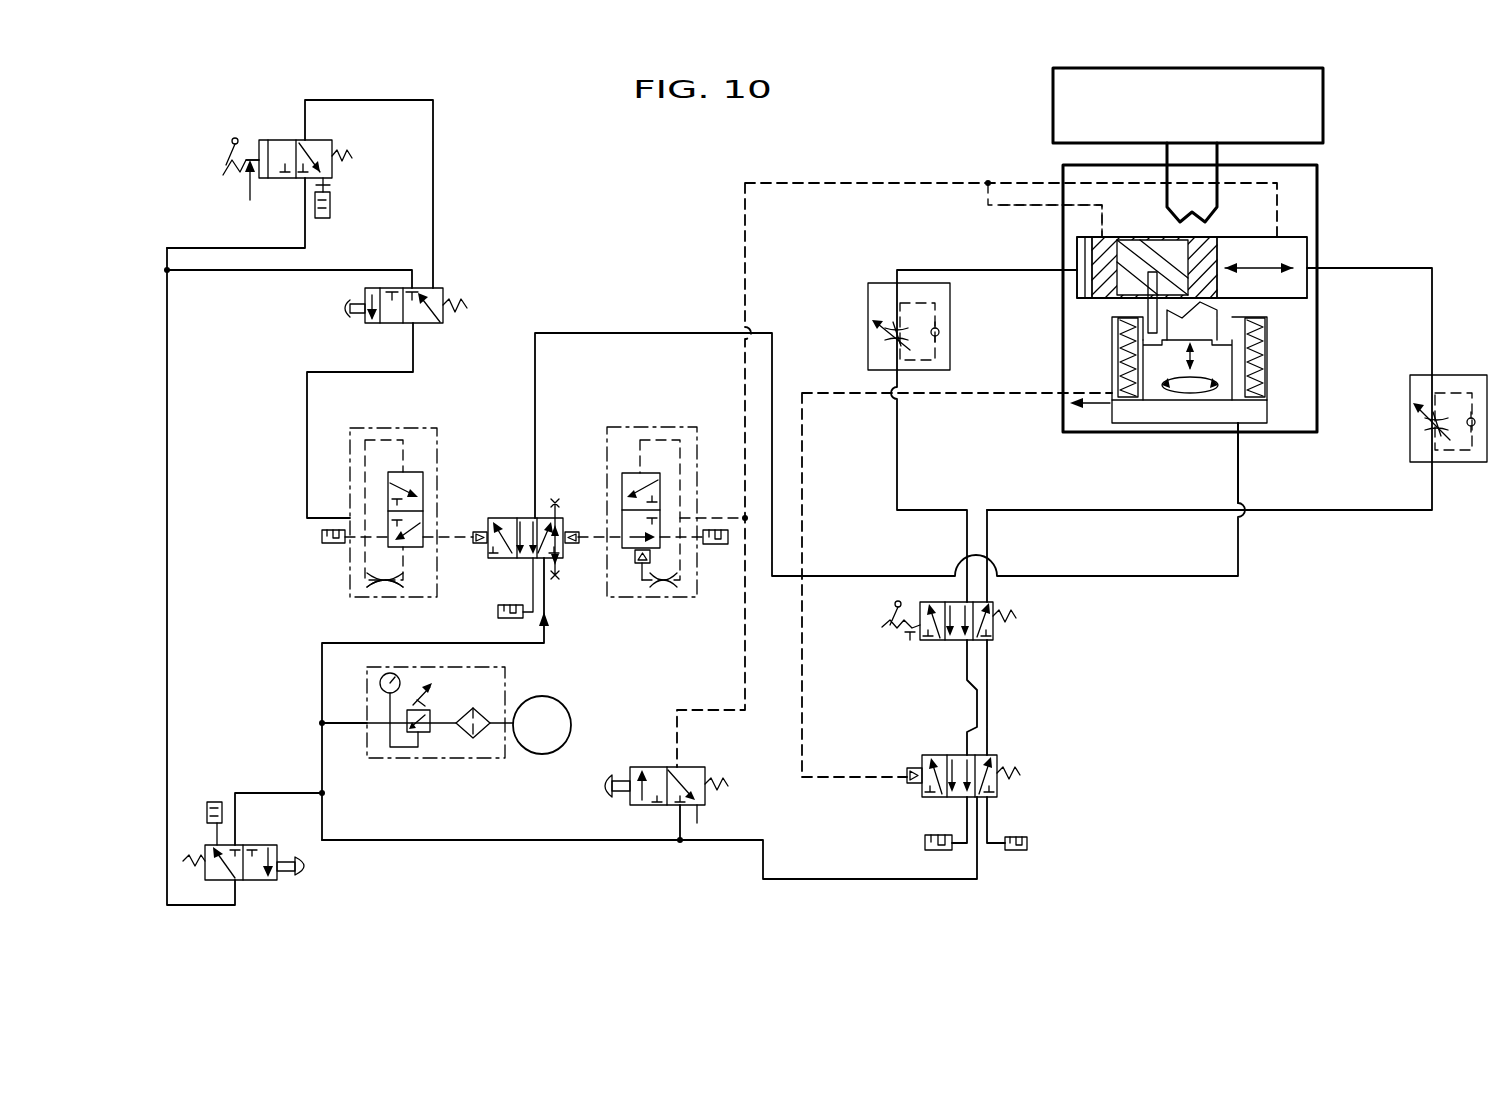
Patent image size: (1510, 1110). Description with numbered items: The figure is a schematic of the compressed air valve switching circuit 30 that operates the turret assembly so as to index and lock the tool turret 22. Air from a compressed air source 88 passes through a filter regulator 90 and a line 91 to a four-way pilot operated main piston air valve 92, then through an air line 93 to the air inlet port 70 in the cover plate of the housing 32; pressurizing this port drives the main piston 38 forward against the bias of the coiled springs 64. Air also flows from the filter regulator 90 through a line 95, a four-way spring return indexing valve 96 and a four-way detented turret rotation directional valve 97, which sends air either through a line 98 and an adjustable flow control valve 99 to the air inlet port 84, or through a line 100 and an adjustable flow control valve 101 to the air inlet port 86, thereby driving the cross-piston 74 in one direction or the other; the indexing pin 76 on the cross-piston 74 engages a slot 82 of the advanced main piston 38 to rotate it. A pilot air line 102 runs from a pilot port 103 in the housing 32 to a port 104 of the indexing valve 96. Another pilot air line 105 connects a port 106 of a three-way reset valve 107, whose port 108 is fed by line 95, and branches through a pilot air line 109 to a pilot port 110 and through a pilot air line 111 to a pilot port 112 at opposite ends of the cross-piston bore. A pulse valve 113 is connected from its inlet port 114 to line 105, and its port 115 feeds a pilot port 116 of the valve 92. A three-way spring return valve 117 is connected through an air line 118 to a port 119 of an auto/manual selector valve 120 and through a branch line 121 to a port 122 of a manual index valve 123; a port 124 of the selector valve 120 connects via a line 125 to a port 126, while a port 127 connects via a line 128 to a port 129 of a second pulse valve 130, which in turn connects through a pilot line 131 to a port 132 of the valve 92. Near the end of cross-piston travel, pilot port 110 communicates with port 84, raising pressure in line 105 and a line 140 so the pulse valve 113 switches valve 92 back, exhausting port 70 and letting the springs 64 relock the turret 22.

The tool turret 22 is at (1323, 130).
The compressed air valve switching circuit 30 is at (1178, 607).
The housing 32 is at (1317, 193).
The main piston 38 is at (1253, 423).
The coiled spring 64 is at (1112, 383).
The air inlet port 70 is at (1225, 423).
The cross-piston 74 is at (1270, 297).
The indexing pin 76 is at (1210, 312).
The slot 82 is at (1267, 410).
The air inlet port 84 is at (1075, 283).
The air inlet port 86 is at (1307, 263).
The compressed air source 88 is at (572, 738).
The filter regulator 90 is at (505, 683).
The line 91 is at (323, 672).
The main piston air valve 92 is at (503, 558).
The air line 93 is at (657, 333).
The line 95 is at (513, 840).
The indexing valve 96 is at (997, 755).
The turret rotation directional valve 97 is at (993, 602).
The line 98 is at (897, 497).
The adjustable flow control valve 99 is at (868, 345).
The line 100 is at (1078, 510).
The adjustable flow control valve 101 is at (1487, 455).
The pilot air line 102 is at (868, 395).
The pilot port 103 is at (1103, 423).
The port 104 is at (920, 767).
The pilot air line 105 is at (863, 185).
The port 106 is at (680, 767).
The reset valve 107 is at (705, 772).
The port 108 is at (675, 808).
The pilot air line 109 is at (1035, 207).
The pilot port 110 is at (1117, 237).
The pilot air line 111 is at (1033, 183).
The pilot port 112 is at (1277, 237).
The pulse valve 113 is at (697, 435).
The inlet port 114 is at (662, 510).
The port 115 is at (617, 537).
The pilot port 116 is at (573, 543).
The spring return valve 117 is at (278, 878).
The air line 118 is at (167, 598).
The port 119 is at (307, 178).
The auto/manual selector valve 120 is at (337, 150).
The branch line 121 is at (332, 270).
The port 122 is at (415, 288).
The manual index valve 123 is at (443, 323).
The port 124 is at (305, 140).
The line 125 is at (433, 157).
The port 126 is at (433, 290).
The port 127 is at (413, 323).
The line 128 is at (307, 433).
The port 129 is at (388, 520).
The second pulse valve 130 is at (350, 468).
The pilot line 131 is at (452, 535).
The port 132 is at (440, 597).
The line 140 is at (733, 520).